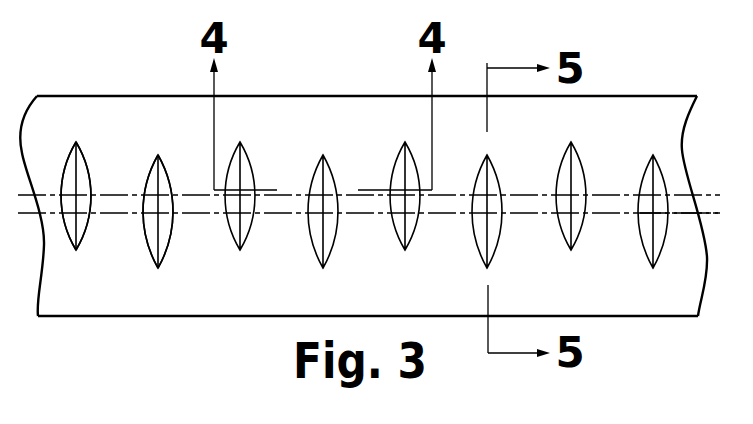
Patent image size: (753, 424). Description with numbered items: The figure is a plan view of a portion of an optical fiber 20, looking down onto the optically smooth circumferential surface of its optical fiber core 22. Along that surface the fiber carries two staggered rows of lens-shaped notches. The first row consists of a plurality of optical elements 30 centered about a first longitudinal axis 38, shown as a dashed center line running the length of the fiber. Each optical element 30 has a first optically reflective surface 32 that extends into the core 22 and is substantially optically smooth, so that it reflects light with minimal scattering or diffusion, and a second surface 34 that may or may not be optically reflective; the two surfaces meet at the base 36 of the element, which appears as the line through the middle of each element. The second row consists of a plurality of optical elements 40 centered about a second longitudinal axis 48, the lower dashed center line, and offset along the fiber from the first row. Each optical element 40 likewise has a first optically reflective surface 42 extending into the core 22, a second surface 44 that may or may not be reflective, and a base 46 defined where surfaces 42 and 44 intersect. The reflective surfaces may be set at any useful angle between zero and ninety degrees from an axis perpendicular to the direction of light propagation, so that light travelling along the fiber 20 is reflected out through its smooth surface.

The optical fiber 20 is at (156, 66).
The optical fiber core 22 is at (328, 123).
The optical element 30 is at (78, 143).
The first optically reflective surface 32 is at (68, 170).
The second surface 34 is at (81, 163).
The base 36 is at (78, 233).
The first longitudinal axis 38 is at (703, 193).
The optical element 40 is at (158, 154).
The first optically reflective surface 42 is at (150, 181).
The second surface 44 is at (163, 177).
The base 46 is at (163, 250).
The second longitudinal axis 48 is at (706, 214).